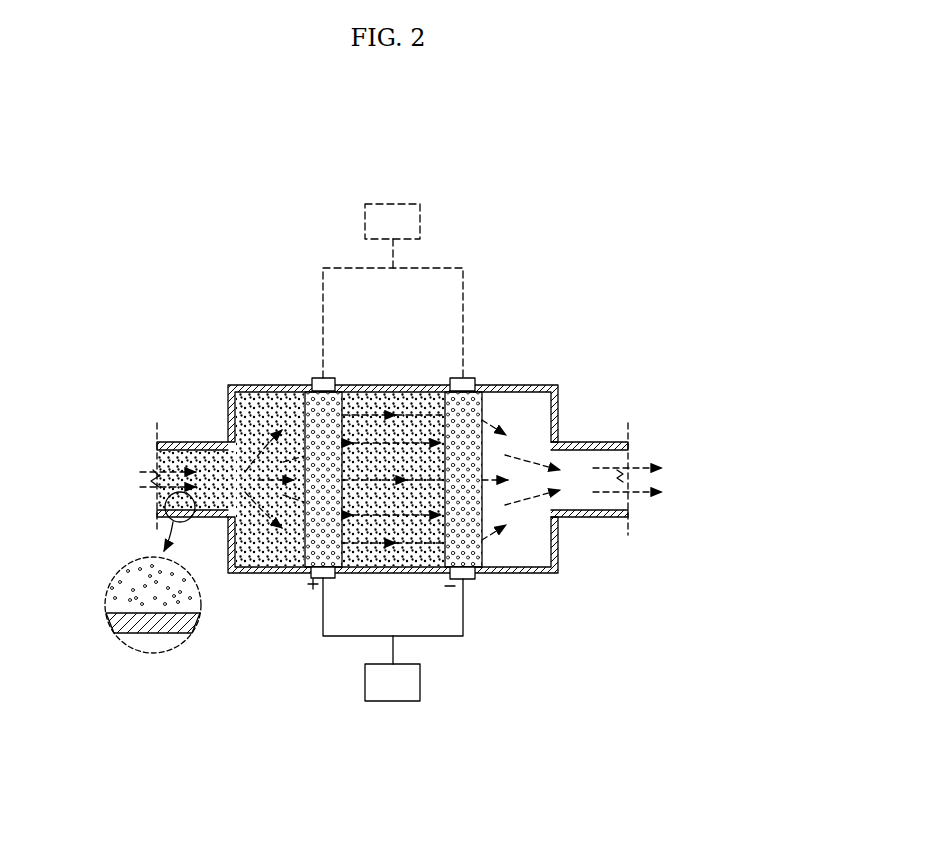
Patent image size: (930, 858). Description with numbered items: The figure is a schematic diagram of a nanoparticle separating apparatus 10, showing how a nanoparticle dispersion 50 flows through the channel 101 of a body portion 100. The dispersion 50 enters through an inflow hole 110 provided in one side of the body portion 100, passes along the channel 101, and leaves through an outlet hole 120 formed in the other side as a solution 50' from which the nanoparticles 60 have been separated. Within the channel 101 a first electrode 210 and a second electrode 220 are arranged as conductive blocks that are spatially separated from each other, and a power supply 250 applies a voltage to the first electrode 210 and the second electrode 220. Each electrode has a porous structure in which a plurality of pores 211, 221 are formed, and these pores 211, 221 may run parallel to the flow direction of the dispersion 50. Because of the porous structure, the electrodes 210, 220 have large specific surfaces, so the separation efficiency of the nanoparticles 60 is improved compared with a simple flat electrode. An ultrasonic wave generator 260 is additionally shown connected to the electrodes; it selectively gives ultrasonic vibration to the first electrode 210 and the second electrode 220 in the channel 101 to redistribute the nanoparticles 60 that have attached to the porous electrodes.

The nanoparticle separating apparatus 10 is at (577, 354).
The nanoparticle dispersion 50 is at (162, 526).
The solution from which nanoparticles are separated 50' is at (572, 469).
The nanoparticles 60 is at (132, 598).
The body portion 100 is at (386, 385).
The channel 101 is at (418, 385).
The inflow hole 110 is at (202, 455).
The outlet hole 120 is at (603, 454).
The first electrode 210 is at (305, 388).
The pores 211 is at (343, 388).
The second electrode 220 is at (443, 388).
The pores 221 is at (489, 388).
The power supply 250 is at (420, 680).
The ultrasonic wave generator 260 is at (393, 204).